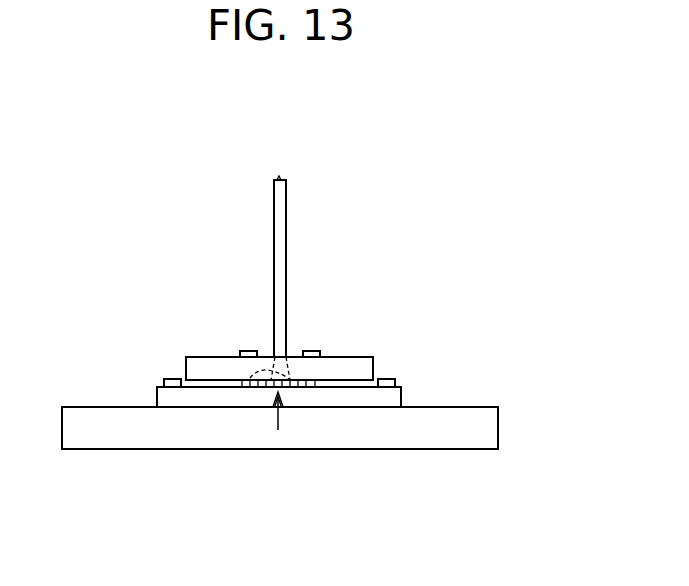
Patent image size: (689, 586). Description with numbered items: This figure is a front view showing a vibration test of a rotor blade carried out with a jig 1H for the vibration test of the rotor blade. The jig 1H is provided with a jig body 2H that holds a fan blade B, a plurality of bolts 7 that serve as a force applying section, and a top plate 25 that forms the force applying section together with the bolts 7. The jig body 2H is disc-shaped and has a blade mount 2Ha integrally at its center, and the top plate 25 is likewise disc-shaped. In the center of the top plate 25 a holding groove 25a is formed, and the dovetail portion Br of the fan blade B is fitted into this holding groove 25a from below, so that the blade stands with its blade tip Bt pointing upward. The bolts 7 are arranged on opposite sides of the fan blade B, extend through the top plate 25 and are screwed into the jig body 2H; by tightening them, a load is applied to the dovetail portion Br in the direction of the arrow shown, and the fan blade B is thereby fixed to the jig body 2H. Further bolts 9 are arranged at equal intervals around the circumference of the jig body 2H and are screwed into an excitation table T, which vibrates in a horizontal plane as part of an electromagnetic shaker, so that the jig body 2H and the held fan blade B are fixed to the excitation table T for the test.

The jig for the vibration test of the rotor blade 1H is at (486, 221).
The excitation table T is at (353, 430).
The jig body 2H is at (401, 395).
The blade mount 2Ha is at (273, 395).
The bolts 9 is at (175, 378).
The top plate 25 is at (208, 357).
The holding groove 25a is at (290, 382).
The bolts (force applying section) 7 is at (247, 350).
The fan blade B is at (287, 198).
The blade tip Bt is at (279, 176).
The dovetail portion Br is at (243, 382).